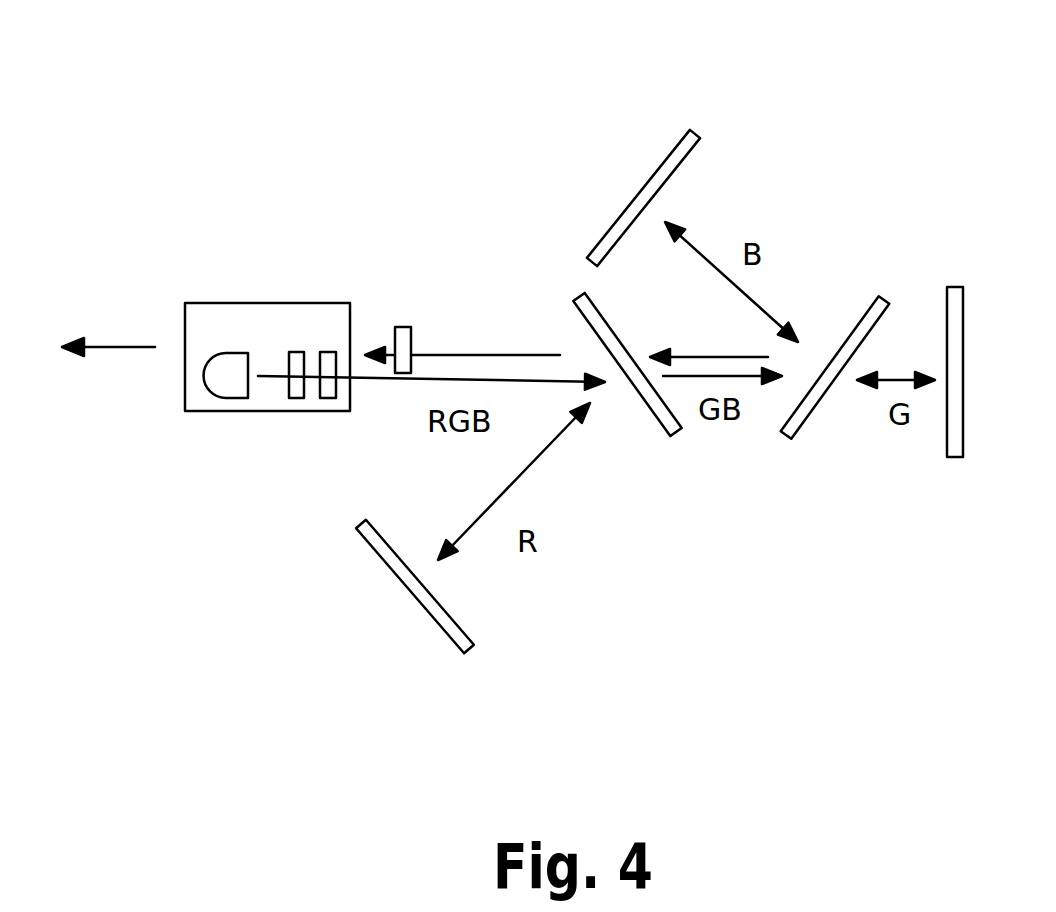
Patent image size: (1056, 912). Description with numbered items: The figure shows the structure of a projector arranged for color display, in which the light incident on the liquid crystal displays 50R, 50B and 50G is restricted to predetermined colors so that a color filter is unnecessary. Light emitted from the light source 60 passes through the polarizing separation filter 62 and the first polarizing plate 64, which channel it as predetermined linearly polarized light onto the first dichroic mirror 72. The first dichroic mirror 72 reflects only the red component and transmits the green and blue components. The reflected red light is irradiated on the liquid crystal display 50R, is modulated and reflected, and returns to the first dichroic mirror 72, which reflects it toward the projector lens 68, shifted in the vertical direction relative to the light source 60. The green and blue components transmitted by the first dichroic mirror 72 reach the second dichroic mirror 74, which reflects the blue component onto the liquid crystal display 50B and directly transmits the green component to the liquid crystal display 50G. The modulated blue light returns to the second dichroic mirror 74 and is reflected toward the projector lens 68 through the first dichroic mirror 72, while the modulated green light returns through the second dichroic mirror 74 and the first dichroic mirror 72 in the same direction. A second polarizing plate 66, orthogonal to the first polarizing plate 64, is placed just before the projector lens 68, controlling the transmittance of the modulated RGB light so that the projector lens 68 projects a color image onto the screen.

The liquid crystal display for the B component 50B is at (692, 130).
The liquid crystal display for the G component 50G is at (955, 287).
The liquid crystal display for the R component 50R is at (468, 653).
The light source 60 is at (225, 400).
The polarizing separation filter 62 is at (296, 398).
The first polarizing plate 64 is at (328, 398).
The second polarizing plate 66 is at (402, 327).
The projector lens 68 is at (267, 303).
The first dichroic mirror 72 is at (675, 437).
The second dichroic mirror 74 is at (788, 440).